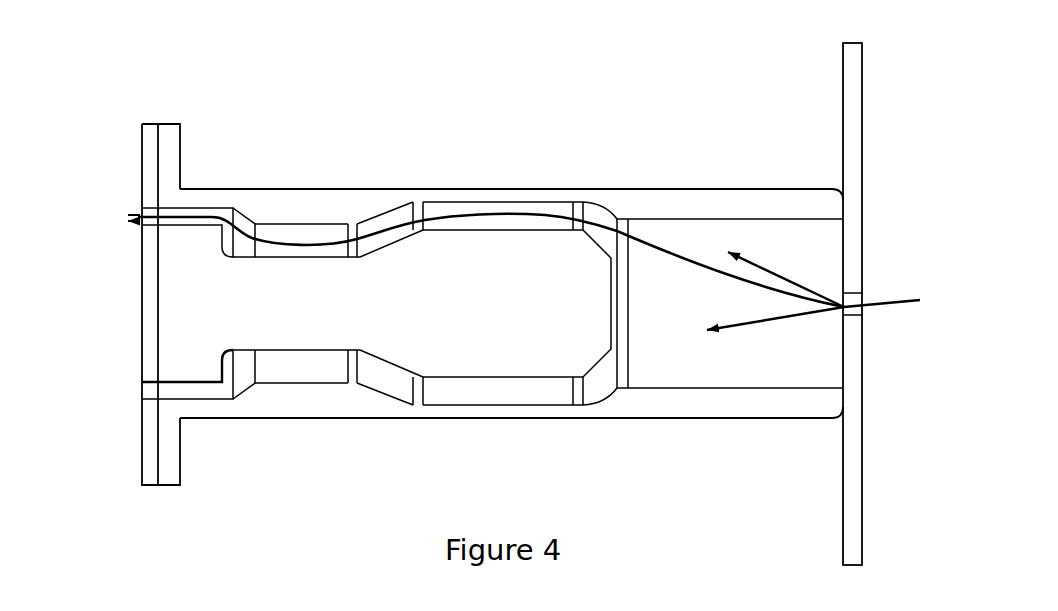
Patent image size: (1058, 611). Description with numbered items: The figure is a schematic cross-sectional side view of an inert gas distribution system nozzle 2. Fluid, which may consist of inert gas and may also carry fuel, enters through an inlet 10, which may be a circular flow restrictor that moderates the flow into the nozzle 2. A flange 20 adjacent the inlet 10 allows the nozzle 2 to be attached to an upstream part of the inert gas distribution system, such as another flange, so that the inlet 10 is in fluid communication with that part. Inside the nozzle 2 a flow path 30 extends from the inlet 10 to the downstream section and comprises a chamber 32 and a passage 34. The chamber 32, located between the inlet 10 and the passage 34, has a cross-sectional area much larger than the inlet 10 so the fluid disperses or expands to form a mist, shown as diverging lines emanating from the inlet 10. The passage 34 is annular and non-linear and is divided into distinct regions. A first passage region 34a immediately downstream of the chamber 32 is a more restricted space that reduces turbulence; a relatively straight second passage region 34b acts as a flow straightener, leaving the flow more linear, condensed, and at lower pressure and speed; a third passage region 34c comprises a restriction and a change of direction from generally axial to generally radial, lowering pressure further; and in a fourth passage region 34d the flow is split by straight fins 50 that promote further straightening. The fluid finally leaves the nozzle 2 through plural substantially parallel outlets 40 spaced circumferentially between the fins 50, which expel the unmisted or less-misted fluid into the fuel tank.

The nozzle 2 is at (704, 77).
The inlet 10 is at (864, 302).
The flange 20 is at (864, 82).
The flow path 30 is at (702, 272).
The chamber 32 is at (748, 373).
The passage 34 is at (398, 210).
The first passage region 34a is at (602, 212).
The second passage region 34b is at (510, 203).
The third passage region 34c is at (243, 218).
The fourth passage region 34d is at (189, 208).
The outlet 40 is at (140, 208).
The fin 50 is at (176, 226).